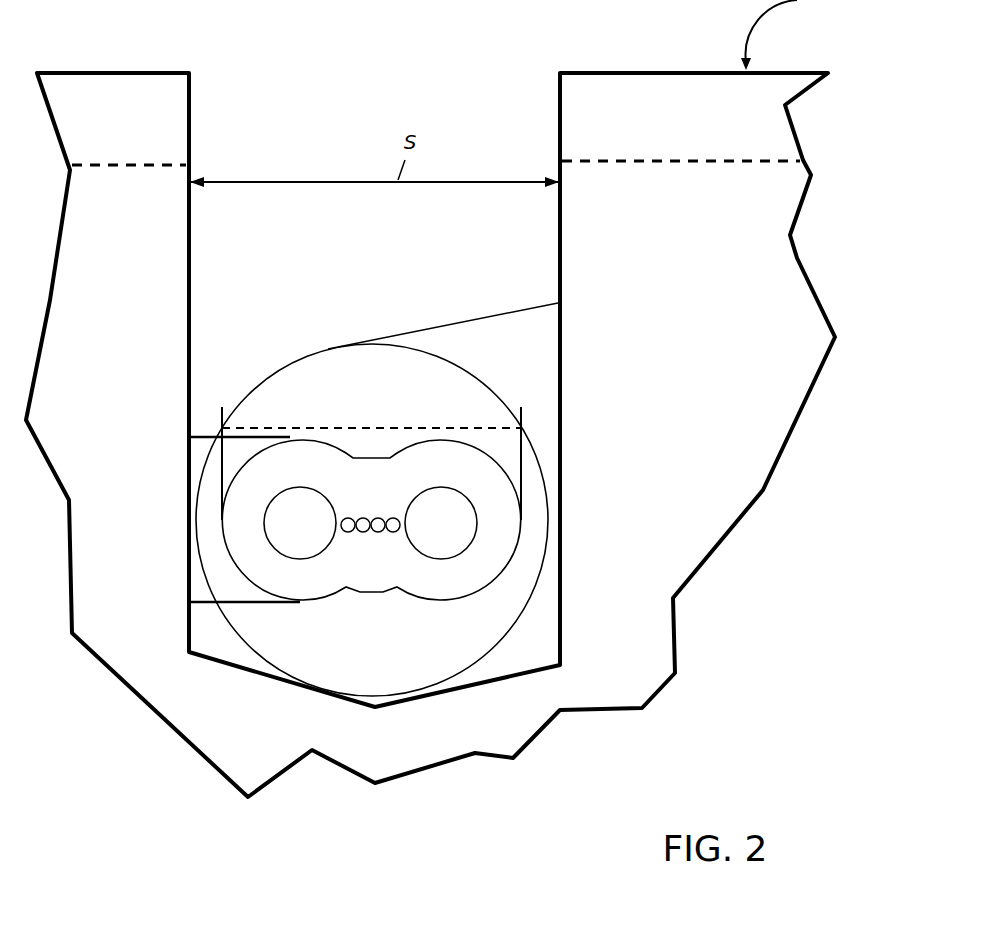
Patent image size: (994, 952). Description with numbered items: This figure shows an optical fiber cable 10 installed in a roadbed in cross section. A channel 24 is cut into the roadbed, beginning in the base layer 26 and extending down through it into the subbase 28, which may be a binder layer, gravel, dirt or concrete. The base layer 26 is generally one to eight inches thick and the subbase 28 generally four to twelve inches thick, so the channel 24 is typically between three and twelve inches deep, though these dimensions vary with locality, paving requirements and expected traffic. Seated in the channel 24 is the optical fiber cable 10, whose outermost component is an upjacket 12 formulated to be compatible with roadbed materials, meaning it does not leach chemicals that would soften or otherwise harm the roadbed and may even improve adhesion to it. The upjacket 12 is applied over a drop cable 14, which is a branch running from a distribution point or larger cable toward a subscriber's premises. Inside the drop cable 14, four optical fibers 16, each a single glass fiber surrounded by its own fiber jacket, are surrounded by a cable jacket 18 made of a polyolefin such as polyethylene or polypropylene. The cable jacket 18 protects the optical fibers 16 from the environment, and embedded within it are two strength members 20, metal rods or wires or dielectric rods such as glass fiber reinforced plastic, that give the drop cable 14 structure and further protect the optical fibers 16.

The optical fiber cable 10 is at (474, 560).
The upjacket 12 is at (395, 381).
The drop cable 14 is at (526, 550).
The optical fibers 16 is at (349, 530).
The cable jacket 18 is at (308, 587).
The strength members 20 is at (307, 528).
The channel 24 is at (356, 246).
The base layer 26 is at (97, 118).
The subbase 28 is at (102, 376).